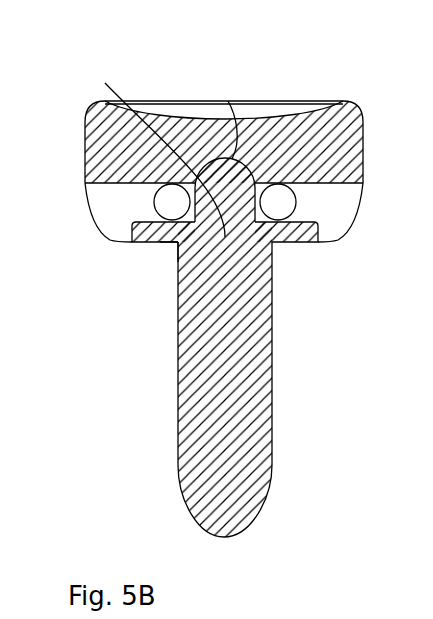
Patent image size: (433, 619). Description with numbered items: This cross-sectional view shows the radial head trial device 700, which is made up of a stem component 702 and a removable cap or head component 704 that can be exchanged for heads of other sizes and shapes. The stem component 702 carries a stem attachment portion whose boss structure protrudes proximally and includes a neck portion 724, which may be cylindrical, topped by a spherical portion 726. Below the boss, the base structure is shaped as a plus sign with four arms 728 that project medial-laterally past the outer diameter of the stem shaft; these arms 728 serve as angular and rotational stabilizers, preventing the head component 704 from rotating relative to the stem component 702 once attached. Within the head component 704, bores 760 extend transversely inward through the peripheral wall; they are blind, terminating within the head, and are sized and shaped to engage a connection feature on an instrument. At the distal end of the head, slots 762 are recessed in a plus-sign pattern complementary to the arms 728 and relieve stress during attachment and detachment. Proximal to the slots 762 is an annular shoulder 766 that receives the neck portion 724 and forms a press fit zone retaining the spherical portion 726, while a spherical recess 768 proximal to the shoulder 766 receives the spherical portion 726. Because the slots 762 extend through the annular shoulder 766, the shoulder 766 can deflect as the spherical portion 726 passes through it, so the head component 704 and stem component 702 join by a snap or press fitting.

The radial head trial device 700 is at (307, 71).
The stem component 702 is at (275, 412).
The head component 704 is at (333, 115).
The neck portion 724 is at (196, 176).
The spherical portion 726 is at (158, 149).
The arms 728 is at (143, 237).
The bores 760 is at (166, 198).
The slots 762 is at (120, 218).
The annular shoulder 766 is at (177, 243).
The spherical recess 768 is at (228, 101).